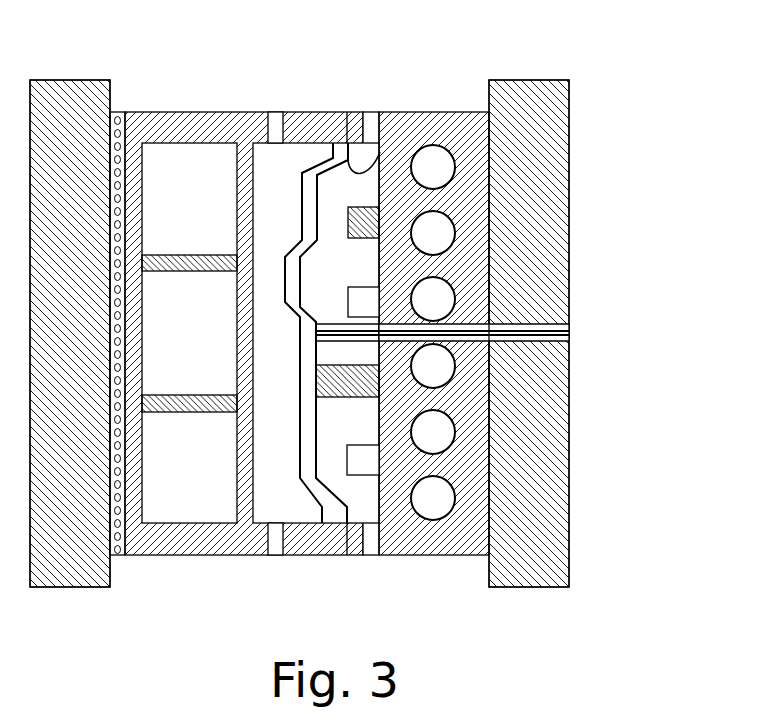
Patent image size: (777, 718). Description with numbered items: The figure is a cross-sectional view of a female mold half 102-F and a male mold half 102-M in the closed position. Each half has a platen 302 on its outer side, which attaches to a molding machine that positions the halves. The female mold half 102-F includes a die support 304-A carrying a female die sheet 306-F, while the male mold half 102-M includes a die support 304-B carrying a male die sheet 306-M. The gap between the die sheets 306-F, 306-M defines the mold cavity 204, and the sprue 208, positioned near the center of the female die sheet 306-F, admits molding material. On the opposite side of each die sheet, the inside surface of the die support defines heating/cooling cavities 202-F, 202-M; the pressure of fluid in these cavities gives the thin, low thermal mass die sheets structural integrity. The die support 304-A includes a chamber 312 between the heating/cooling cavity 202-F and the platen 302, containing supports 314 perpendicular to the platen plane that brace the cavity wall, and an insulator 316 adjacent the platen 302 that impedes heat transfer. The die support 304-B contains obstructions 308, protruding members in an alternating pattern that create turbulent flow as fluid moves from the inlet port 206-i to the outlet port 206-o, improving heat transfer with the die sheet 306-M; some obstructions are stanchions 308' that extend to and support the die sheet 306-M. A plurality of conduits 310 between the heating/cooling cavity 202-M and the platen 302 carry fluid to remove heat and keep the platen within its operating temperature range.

The platen 302 is at (101, 80).
The die support 304-A is at (143, 111).
The die support 304-B is at (450, 111).
The outlet port 206-o is at (275, 112).
The inlet port 206-i is at (275, 555).
The male die sheet 306-M is at (380, 152).
The female die sheet 306-F is at (314, 508).
The obstructions 308 is at (348, 282).
The stanchions 308' is at (349, 436).
The conduits 310 is at (473, 267).
The sprue 208 is at (570, 333).
The mold cavity 204 is at (306, 452).
The chamber 312 is at (203, 209).
The supports 314 is at (203, 395).
The heating/cooling cavity 202-F is at (270, 478).
The heating/cooling cavity 202-M is at (367, 502).
The insulator 316 is at (117, 557).
The female mold half 102-F is at (80, 588).
The male mold half 102-M is at (530, 588).